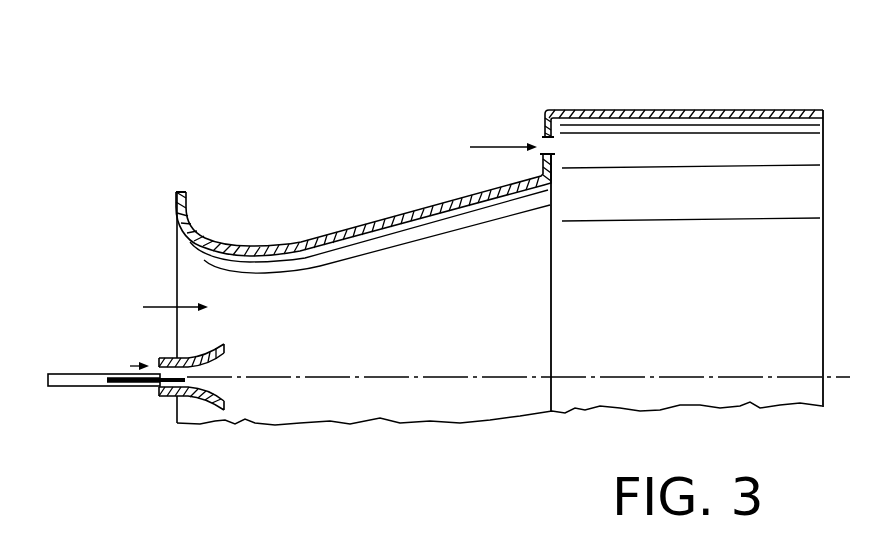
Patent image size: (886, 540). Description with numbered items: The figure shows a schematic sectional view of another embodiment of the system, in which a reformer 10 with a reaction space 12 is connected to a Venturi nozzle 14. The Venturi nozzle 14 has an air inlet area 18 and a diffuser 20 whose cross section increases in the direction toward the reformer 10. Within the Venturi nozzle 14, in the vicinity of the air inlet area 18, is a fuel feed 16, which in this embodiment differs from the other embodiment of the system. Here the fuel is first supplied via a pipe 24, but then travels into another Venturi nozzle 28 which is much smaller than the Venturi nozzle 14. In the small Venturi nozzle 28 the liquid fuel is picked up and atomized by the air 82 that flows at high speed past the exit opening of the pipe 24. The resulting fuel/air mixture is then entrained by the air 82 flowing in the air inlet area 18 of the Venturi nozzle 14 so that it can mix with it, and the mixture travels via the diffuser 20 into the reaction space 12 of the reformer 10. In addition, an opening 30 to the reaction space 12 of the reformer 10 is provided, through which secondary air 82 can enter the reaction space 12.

The reformer 10 is at (617, 108).
The reaction space 12 is at (716, 143).
The Venturi nozzle 14 is at (367, 220).
The fuel feed 16 is at (96, 386).
The air inlet area 18 is at (166, 256).
The diffuser 20 is at (435, 362).
The pipe 24 is at (100, 373).
The Venturi nozzle 28 is at (198, 408).
The opening 30 is at (547, 136).
The air 82 is at (140, 366).